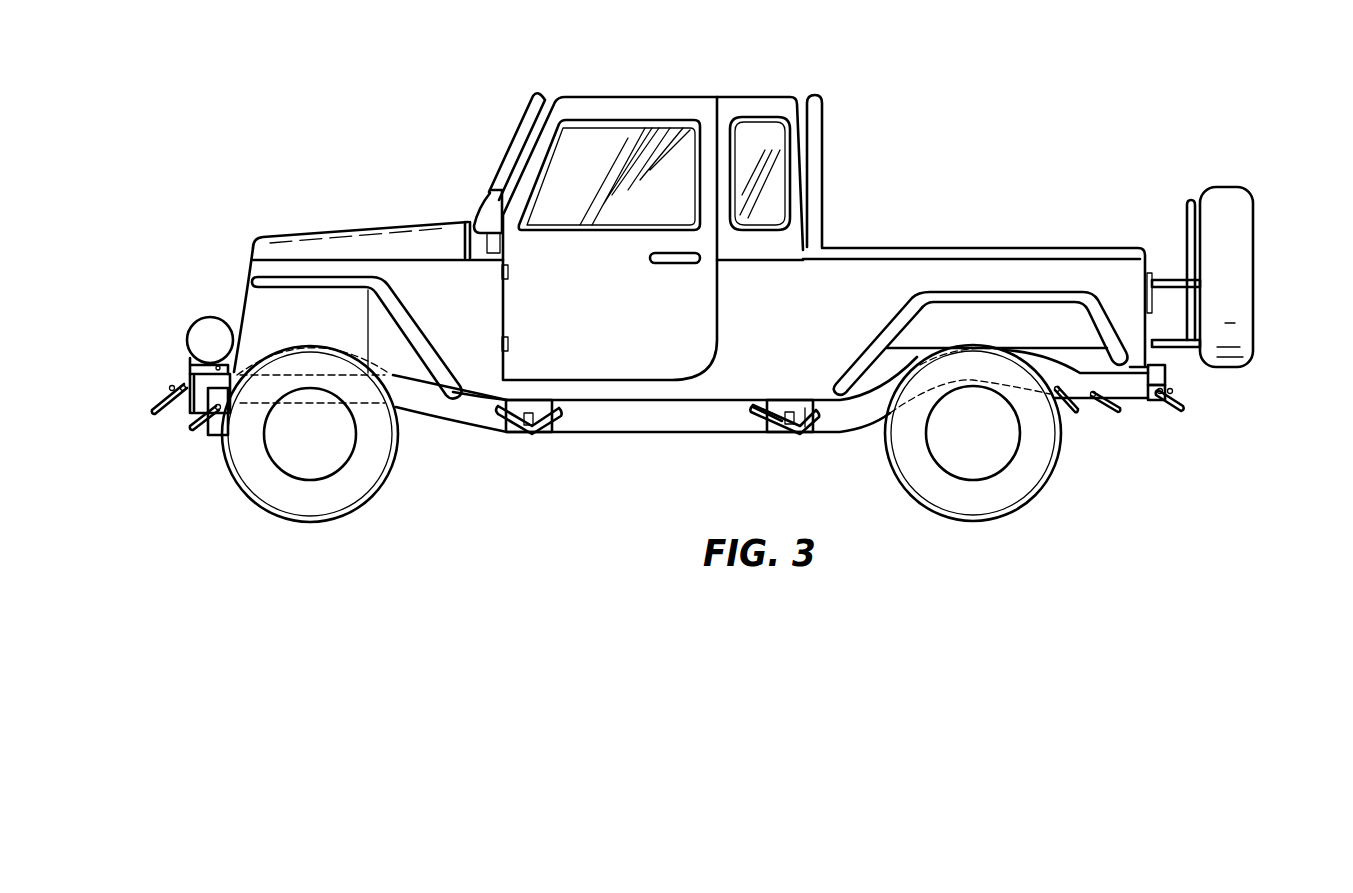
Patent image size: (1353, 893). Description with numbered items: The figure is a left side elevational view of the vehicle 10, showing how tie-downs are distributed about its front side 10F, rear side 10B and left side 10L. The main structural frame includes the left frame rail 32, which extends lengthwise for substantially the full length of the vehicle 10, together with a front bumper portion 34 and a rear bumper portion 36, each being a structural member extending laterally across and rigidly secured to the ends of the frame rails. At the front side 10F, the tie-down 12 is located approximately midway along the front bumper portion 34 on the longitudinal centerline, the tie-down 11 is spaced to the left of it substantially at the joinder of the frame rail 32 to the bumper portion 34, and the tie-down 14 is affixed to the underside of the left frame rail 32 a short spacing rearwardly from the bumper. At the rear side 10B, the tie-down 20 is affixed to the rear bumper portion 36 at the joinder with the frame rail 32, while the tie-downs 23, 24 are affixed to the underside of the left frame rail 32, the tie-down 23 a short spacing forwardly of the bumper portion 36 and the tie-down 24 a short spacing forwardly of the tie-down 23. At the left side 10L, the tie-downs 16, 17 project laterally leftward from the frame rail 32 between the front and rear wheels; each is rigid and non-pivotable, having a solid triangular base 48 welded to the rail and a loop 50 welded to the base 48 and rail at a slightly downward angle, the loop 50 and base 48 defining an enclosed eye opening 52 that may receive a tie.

The vehicle 10 is at (410, 152).
The front side 10F is at (160, 310).
The rear side 10B is at (1292, 270).
The left side 10L is at (636, 465).
The tie-down 11 is at (186, 392).
The tie-down 12 is at (150, 412).
The tie-down 14 is at (200, 420).
The tie-down 16 is at (528, 436).
The tie-down 17 is at (800, 434).
The tie-down 20 is at (1183, 410).
The tie-down 23 is at (1120, 412).
The tie-down 24 is at (1068, 402).
The left frame rail 32 is at (438, 408).
The front bumper portion 34 is at (178, 412).
The rear bumper portion 36 is at (1175, 382).
The triangular base 48 is at (768, 425).
The loop 50 is at (775, 412).
The eye opening 52 is at (810, 432).